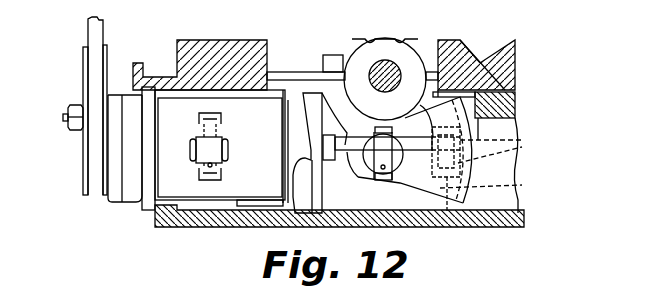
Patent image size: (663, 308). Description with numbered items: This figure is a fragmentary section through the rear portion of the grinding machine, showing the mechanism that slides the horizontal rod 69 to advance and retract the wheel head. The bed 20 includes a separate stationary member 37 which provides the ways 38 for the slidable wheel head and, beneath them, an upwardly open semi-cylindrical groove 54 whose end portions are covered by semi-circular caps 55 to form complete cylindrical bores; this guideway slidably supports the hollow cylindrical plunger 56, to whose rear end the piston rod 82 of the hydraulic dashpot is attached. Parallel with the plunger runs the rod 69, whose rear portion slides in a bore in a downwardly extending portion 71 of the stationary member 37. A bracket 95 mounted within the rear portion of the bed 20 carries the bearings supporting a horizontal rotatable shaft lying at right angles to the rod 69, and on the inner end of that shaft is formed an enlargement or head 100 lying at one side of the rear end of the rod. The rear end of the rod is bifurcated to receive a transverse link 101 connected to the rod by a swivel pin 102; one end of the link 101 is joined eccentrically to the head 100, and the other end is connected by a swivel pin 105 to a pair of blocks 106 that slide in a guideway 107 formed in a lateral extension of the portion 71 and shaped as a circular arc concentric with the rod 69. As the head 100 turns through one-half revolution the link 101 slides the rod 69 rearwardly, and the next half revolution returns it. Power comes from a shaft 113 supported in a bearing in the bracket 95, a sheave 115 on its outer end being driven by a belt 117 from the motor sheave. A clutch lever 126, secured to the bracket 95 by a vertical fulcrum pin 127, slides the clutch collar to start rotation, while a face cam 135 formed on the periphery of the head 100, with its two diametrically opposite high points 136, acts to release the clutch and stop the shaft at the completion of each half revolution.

The belt 117 is at (95, 30).
The sheave 115 is at (83, 67).
The shaft 113 is at (68, 117).
The bracket 95 is at (147, 190).
The stationary member 37 is at (218, 57).
The face cam 135 is at (297, 100).
The high points 136 is at (290, 205).
The head 100 is at (310, 222).
The link 101 is at (345, 150).
The groove 54 is at (337, 53).
The caps 55 is at (340, 46).
The plunger 56 is at (367, 50).
The piston rod 82 is at (384, 62).
The ways 38 is at (493, 58).
The downwardly extending portion 71 is at (352, 164).
The rod 69 is at (362, 170).
The swivel pin 102 is at (380, 178).
The blocks 106 is at (522, 140).
The guideway 107 is at (522, 185).
The swivel pin 105 is at (448, 232).
The bed 20 is at (495, 232).
The clutch lever 126 is at (229, 152).
The fulcrum pin 127 is at (208, 182).